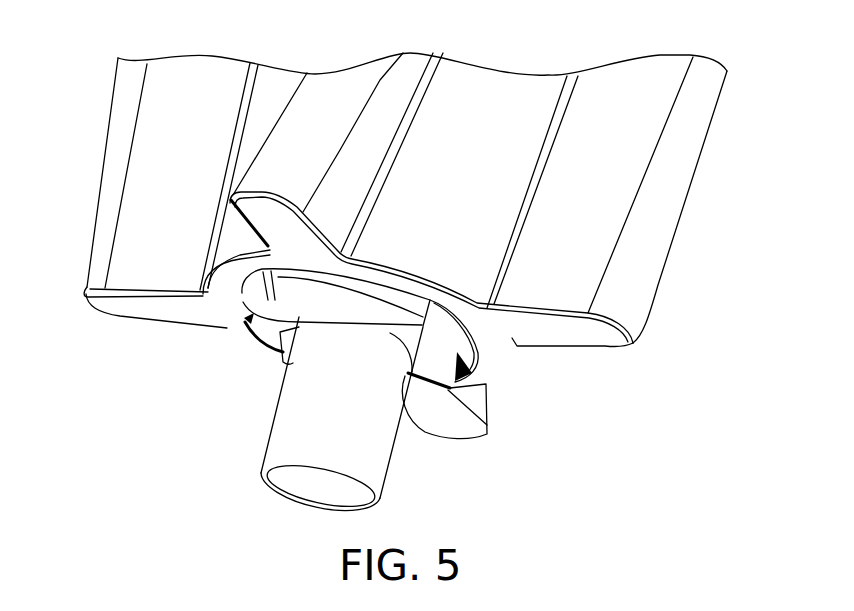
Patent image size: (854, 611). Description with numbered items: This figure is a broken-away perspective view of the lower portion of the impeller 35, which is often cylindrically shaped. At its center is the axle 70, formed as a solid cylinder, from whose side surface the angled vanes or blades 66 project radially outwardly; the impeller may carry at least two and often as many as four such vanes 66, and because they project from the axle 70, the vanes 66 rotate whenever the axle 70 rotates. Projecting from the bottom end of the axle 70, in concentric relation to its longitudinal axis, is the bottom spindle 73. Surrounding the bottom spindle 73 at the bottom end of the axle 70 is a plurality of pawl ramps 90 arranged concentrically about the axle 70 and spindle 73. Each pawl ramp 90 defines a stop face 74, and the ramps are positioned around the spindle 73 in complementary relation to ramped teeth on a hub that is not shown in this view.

The impeller 35 is at (676, 240).
The vanes 66 is at (157, 223).
The axle 70 is at (461, 195).
The bottom spindle 73 is at (303, 430).
The stop face 74 is at (283, 316).
The pawl ramps 90 is at (246, 323).